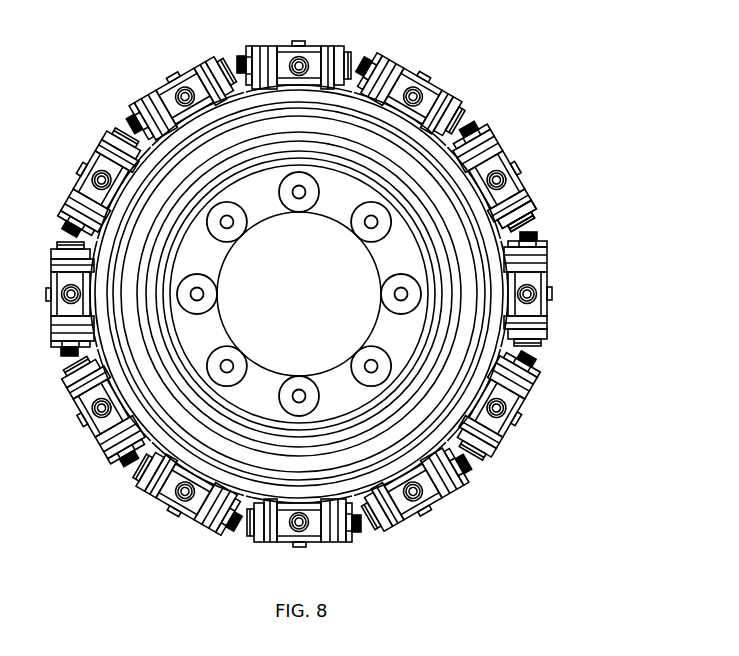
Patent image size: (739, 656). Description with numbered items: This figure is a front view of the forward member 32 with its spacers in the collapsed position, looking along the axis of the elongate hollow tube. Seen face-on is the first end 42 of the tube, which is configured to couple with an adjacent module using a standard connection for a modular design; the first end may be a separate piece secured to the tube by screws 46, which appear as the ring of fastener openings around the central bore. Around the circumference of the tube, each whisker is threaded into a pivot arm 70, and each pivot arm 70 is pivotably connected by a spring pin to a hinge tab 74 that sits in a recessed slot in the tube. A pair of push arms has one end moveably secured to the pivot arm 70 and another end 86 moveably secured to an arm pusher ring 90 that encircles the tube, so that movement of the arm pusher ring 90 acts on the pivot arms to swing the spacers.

The clamping flange assembly 32 is at (108, 53).
The first end 42 is at (448, 380).
The screws 46 is at (377, 375).
The pivot arm 70 is at (495, 165).
The hinge tab 74 is at (522, 168).
The another end 86 is at (527, 320).
The arm pusher ring 90 is at (493, 245).